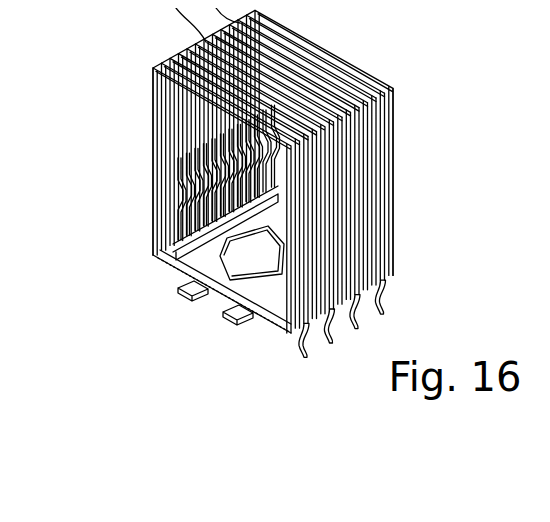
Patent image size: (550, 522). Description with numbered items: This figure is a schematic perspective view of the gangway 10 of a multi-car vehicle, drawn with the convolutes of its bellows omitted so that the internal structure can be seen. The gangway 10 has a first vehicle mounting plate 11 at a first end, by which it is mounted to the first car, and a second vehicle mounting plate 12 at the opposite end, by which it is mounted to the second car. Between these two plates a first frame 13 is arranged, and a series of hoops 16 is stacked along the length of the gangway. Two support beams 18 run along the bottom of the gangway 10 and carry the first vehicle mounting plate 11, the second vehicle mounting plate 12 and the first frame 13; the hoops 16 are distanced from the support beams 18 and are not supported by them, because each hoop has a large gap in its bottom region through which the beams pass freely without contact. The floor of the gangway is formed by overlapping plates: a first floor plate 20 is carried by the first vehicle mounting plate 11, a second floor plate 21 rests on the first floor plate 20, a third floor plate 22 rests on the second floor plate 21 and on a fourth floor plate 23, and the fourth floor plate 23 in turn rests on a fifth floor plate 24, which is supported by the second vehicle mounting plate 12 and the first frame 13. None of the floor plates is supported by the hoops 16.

The gangway 10 is at (450, 160).
The first vehicle mounting plate 11 is at (388, 80).
The second vehicle mounting plate 12 is at (150, 60).
The first frame 13 is at (180, 44).
The hoops 16 is at (376, 306).
The support beams 18 is at (183, 290).
The first floor plate 20 is at (247, 190).
The second floor plate 21 is at (207, 219).
The third floor plate 22 is at (205, 238).
The fourth floor plate 23 is at (195, 254).
The fifth floor plate 24 is at (192, 260).